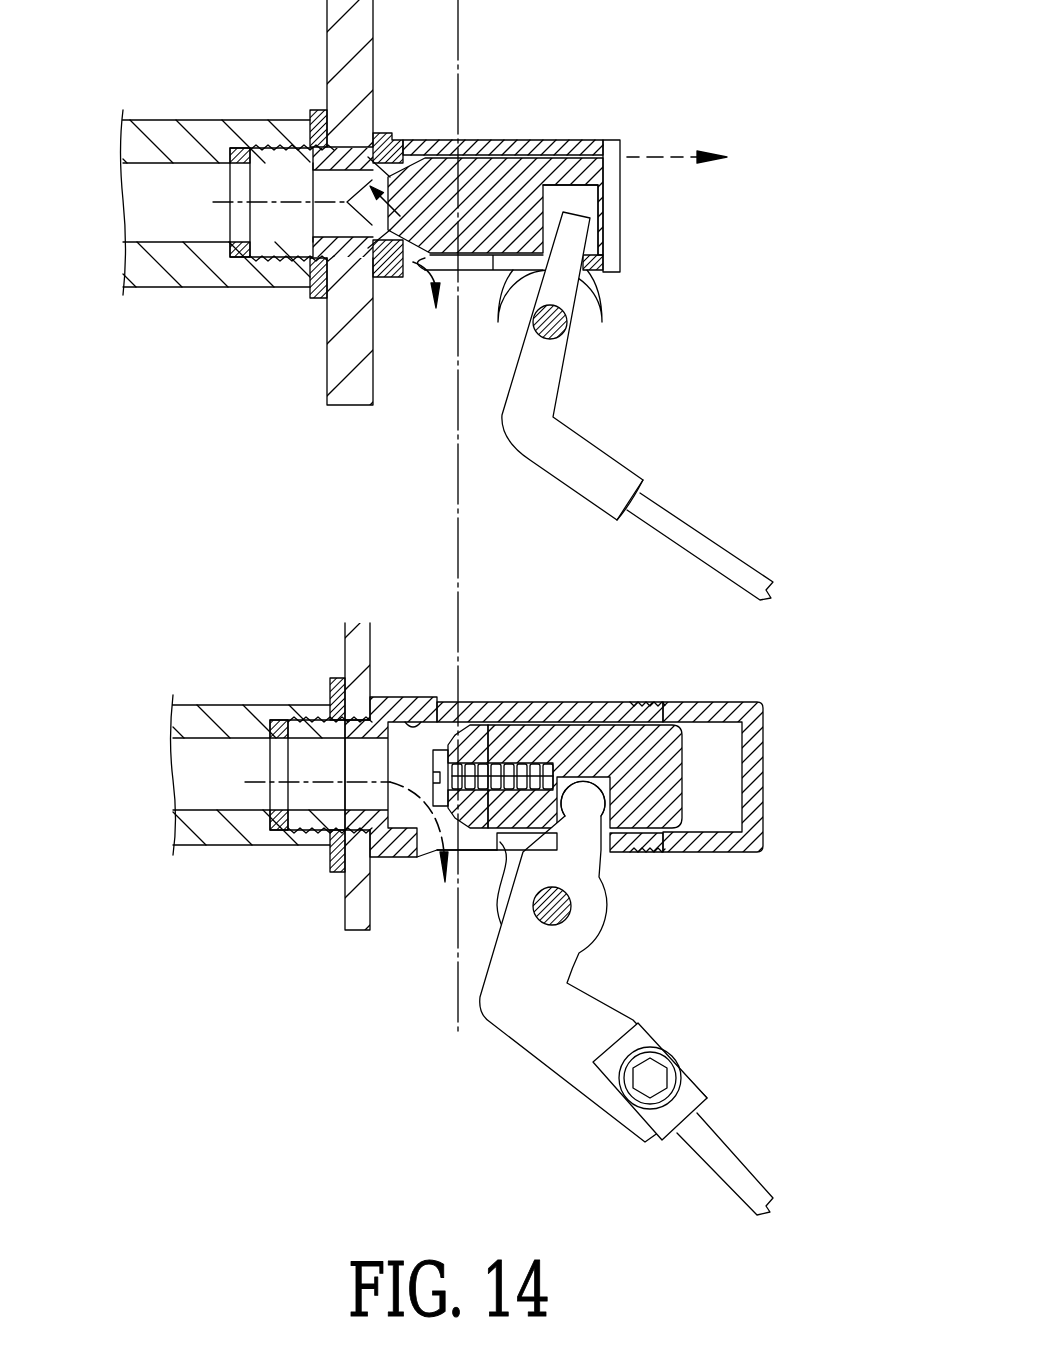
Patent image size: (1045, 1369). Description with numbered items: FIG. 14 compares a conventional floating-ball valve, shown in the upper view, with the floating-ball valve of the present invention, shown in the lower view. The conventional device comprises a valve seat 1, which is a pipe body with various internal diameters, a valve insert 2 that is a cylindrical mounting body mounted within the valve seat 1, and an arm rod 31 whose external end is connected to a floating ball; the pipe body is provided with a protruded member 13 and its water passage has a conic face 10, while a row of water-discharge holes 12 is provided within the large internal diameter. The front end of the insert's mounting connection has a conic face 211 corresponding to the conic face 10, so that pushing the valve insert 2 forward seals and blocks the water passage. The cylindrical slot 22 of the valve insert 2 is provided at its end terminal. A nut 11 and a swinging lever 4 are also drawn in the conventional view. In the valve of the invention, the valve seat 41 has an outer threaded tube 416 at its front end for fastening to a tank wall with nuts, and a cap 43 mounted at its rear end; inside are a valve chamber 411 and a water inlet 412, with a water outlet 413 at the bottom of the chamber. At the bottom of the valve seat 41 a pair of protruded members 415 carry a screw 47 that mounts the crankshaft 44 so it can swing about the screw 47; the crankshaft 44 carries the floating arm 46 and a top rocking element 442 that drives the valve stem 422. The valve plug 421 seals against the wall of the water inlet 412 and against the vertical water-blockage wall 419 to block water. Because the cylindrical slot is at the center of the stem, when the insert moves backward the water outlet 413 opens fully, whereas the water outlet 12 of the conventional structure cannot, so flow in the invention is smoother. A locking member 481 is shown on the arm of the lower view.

The valve seat 1 is at (562, 142).
The valve insert 2 is at (498, 168).
The lever 4 is at (568, 320).
The conic face 10 is at (414, 140).
The nut 11 is at (294, 148).
The water-discharge holes 12 is at (485, 280).
The protruded member 13 is at (592, 346).
The cylindrical slot 22 is at (600, 196).
The arm rod 31 is at (598, 458).
The conic face 211 is at (418, 264).
The valve seat 41 is at (612, 712).
The cap 43 is at (727, 708).
The crankshaft 44 is at (547, 1048).
The floating arm 46 is at (723, 1157).
The screw 47 is at (567, 903).
The valve chamber 411 is at (405, 728).
The water inlet 412 is at (302, 722).
The water outlet 413 is at (462, 852).
The protruded members 415 is at (594, 933).
The outer threaded tube 416 is at (316, 720).
The vertical water-blockage wall 419 is at (410, 832).
The valve plug 421 is at (472, 740).
The valve stem 422 is at (576, 738).
The rocking element 442 is at (598, 830).
The locking nut 481 is at (673, 1060).